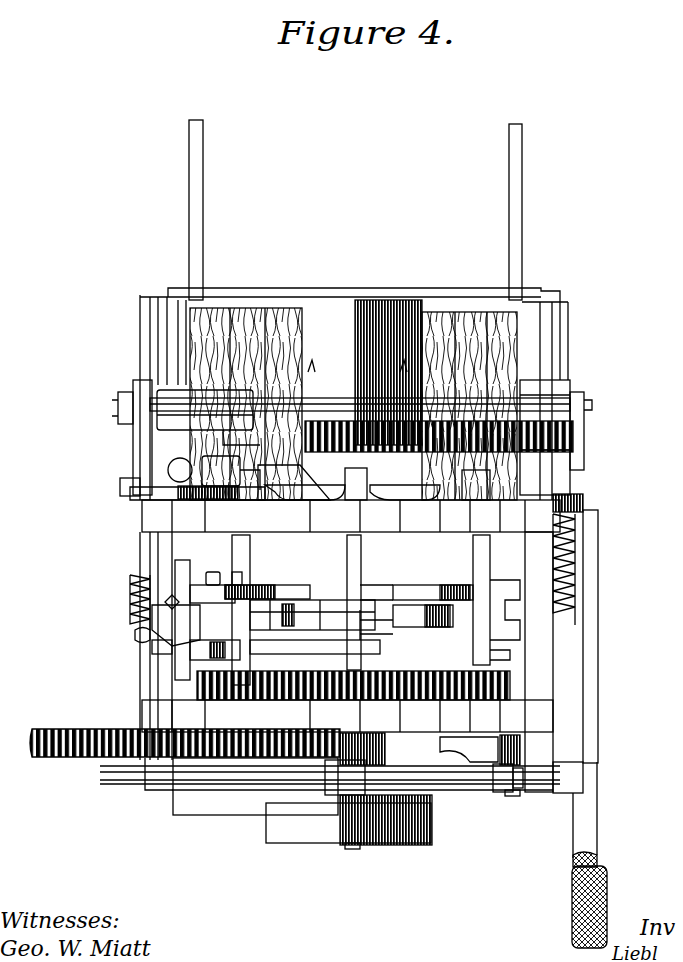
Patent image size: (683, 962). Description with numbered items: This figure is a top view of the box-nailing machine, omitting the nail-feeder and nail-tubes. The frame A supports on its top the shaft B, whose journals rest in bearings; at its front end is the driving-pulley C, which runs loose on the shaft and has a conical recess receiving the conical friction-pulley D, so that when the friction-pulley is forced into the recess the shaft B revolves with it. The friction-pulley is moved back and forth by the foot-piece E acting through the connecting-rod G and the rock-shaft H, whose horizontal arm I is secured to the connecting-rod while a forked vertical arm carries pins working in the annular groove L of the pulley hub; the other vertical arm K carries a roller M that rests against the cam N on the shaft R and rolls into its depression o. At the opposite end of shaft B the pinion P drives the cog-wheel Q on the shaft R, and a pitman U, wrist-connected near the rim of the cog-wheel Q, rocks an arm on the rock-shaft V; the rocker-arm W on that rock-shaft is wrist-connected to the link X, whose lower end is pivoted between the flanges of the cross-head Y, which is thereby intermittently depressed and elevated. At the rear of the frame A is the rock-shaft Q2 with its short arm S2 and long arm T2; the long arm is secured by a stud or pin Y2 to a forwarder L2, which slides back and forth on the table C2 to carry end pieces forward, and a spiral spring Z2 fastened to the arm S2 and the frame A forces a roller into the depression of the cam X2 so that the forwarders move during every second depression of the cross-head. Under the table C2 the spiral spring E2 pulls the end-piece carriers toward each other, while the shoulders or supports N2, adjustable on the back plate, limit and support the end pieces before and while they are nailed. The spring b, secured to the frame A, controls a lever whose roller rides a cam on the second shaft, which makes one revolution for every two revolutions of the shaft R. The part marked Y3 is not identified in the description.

The frame A is at (350, 646).
The shaft B is at (400, 569).
The spring b is at (261, 485).
The driving-pulley C is at (348, 823).
The table C2 is at (370, 296).
The friction-pulley D is at (450, 818).
The foot-piece E is at (598, 907).
The spiral spring E2 is at (353, 400).
The connecting-rod G is at (600, 852).
The rock-shaft H is at (241, 786).
The horizontal arm I is at (575, 810).
The vertical arm K is at (498, 790).
The annular groove L is at (345, 845).
The forwarder L2 is at (353, 397).
The roller M is at (508, 798).
The cam N is at (498, 750).
The shoulders or supports N2 is at (202, 660).
The depression o is at (469, 751).
The pinion P is at (294, 474).
The cog-wheel Q is at (572, 438).
The rock-shaft Q2 is at (305, 489).
The shaft R is at (476, 567).
The short arm S2 is at (586, 502).
The long arm T2 is at (122, 437).
The pitman U is at (360, 396).
The rock-shaft V is at (232, 503).
The rocker-arm W is at (267, 610).
The link X is at (312, 615).
The cam X2 is at (192, 489).
The cross-head Y is at (306, 615).
The stud or pin Y2 is at (116, 410).
The disk Y3 is at (180, 470).
The spiral spring Z2 is at (580, 578).